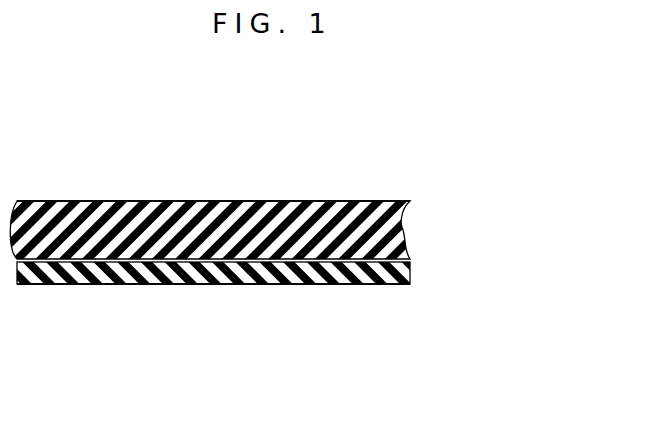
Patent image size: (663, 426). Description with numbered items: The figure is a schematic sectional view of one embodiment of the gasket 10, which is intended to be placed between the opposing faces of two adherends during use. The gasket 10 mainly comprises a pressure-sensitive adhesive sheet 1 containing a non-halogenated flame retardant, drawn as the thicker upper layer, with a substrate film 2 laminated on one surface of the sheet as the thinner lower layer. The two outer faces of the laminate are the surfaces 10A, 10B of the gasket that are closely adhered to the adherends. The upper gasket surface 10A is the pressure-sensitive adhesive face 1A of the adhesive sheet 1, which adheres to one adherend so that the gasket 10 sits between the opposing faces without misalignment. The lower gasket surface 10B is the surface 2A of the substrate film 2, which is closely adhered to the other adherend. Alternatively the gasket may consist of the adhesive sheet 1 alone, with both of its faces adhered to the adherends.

The gasket 10 is at (443, 178).
The pressure-sensitive adhesive sheet 1 is at (403, 230).
The substrate film 2 is at (410, 268).
The surface of the pressure-sensitive adhesive sheet 1A is at (187, 201).
The surface of the gasket 10A is at (263, 201).
The surface of the substrate film 2A is at (200, 284).
The surface of the gasket 10B is at (262, 284).